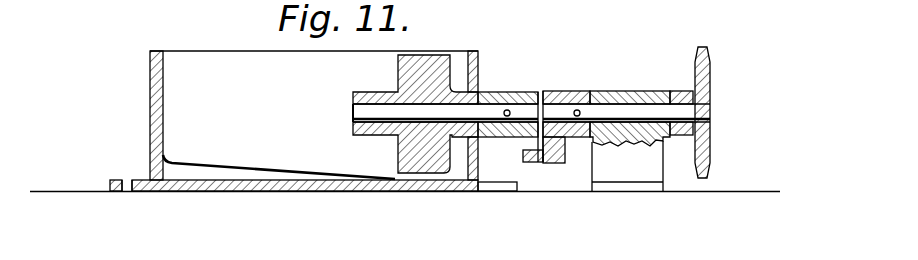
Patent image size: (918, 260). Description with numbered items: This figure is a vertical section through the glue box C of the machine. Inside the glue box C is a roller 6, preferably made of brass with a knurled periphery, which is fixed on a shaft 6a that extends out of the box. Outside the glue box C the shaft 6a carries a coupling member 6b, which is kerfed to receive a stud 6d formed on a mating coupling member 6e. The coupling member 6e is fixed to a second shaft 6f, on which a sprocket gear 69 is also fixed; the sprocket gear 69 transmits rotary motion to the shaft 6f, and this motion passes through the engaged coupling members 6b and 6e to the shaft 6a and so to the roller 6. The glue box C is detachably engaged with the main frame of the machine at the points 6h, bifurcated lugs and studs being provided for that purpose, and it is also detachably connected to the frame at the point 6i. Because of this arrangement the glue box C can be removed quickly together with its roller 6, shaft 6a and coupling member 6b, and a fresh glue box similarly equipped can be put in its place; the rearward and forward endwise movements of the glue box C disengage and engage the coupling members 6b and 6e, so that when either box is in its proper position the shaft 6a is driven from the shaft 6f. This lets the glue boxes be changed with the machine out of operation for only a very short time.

The glue box C is at (294, 121).
The roller 6 is at (412, 145).
The shaft 6a is at (352, 116).
The coupling member 6b is at (533, 74).
The stud 6d is at (537, 164).
The coupling member 6e is at (567, 93).
The shaft 6f is at (620, 113).
The points of detachable engagement 6h is at (503, 183).
The point of detachable connection 6i is at (127, 181).
The sprocket gear 69 is at (708, 88).